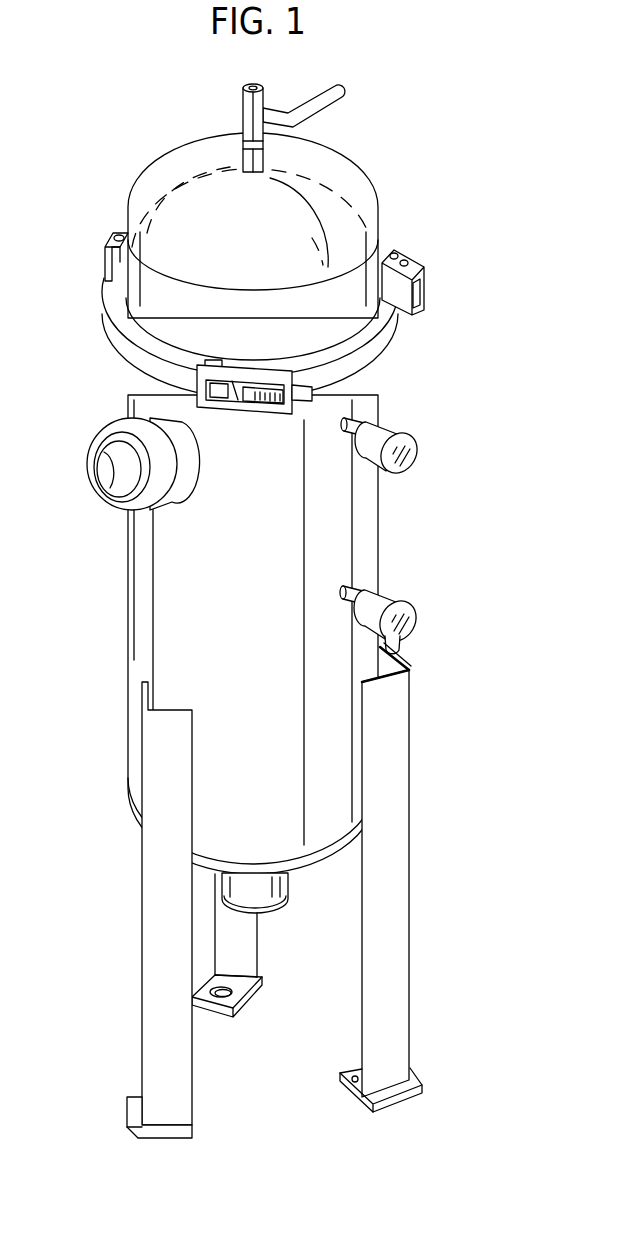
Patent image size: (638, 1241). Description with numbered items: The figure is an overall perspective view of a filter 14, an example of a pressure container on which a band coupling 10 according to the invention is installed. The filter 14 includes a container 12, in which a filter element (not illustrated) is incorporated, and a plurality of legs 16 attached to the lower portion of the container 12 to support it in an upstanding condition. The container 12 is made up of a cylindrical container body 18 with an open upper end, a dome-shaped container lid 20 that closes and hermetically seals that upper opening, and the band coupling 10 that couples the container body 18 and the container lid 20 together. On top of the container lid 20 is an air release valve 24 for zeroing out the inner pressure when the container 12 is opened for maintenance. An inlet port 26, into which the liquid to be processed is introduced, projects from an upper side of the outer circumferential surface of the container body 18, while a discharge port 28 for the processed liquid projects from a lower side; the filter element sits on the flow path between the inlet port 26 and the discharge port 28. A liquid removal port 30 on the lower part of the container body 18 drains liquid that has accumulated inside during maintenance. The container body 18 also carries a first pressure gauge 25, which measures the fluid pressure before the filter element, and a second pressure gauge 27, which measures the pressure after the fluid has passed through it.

The band coupling 10 is at (293, 498).
The container 12 is at (296, 647).
The filter 14 is at (431, 87).
The legs 16 is at (244, 943).
The container body 18 is at (340, 514).
The container lid 20 is at (352, 193).
The air release valve 24 is at (245, 118).
The first pressure gauge 25 is at (413, 455).
The inlet port 26 is at (113, 436).
The second pressure gauge 27 is at (413, 618).
The discharge port 28 is at (397, 648).
The liquid removal port 30 is at (258, 887).